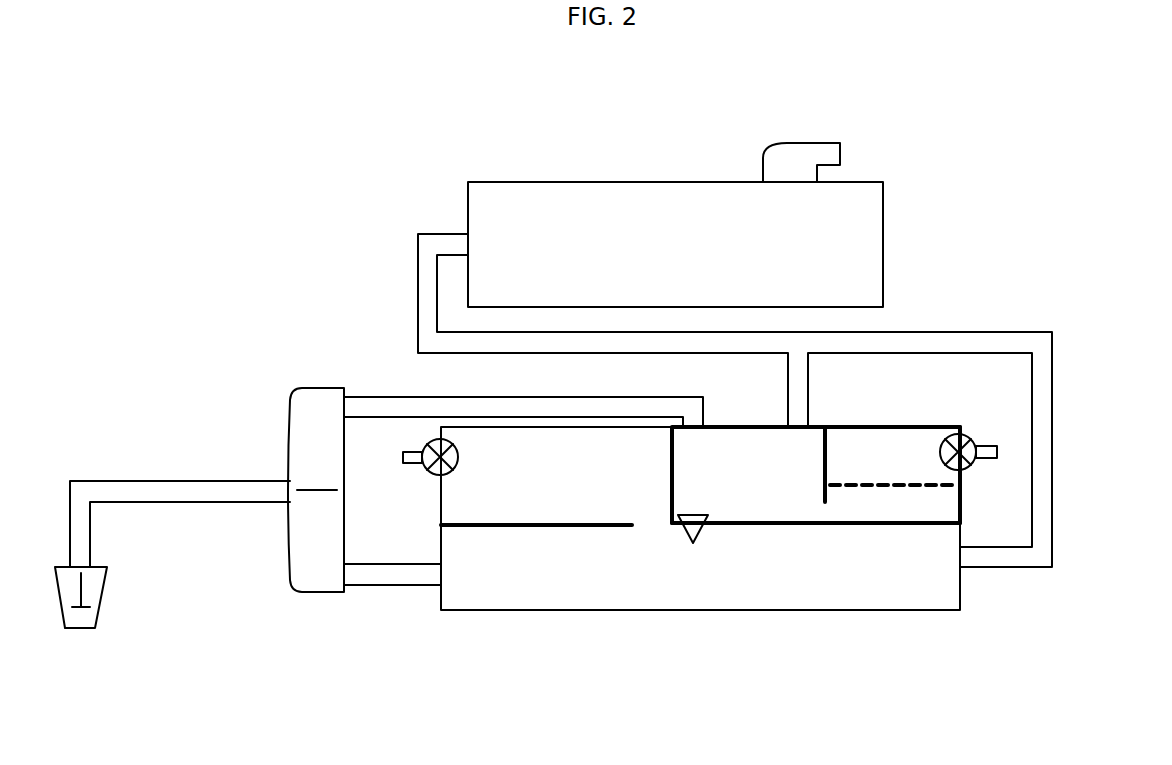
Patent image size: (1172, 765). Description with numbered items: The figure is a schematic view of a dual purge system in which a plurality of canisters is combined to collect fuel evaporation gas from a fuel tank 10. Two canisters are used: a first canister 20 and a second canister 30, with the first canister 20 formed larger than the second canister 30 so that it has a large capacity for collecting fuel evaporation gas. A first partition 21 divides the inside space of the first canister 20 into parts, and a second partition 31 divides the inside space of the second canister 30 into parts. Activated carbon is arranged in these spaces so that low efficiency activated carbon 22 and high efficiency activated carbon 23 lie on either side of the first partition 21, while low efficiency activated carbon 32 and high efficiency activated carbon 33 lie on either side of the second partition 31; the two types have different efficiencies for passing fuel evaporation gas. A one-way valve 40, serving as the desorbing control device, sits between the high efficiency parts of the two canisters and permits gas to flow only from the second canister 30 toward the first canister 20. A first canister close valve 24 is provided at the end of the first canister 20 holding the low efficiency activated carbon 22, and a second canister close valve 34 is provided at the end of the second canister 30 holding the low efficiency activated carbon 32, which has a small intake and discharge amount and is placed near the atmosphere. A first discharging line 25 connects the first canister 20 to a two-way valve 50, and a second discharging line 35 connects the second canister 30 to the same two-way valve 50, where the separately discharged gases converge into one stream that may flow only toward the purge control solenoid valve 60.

The fuel tank 10 is at (630, 192).
The first canister 20 is at (602, 607).
The first partition 21 is at (563, 527).
The low efficiency activated carbon 22 is at (520, 488).
The high efficiency activated carbon 23 is at (724, 588).
The first canister close valve 24 is at (433, 437).
The first discharging line 25 is at (397, 587).
The second canister 30 is at (933, 423).
The second partition 31 is at (823, 463).
The low efficiency activated carbon 32 is at (913, 465).
The high efficiency activated carbon 33 is at (785, 493).
The second canister close valve 34 is at (972, 432).
The second discharging line 35 is at (358, 395).
The one-way valve 40 is at (688, 537).
The two-way valve 50 is at (312, 587).
The purge control solenoid valve 60 is at (80, 628).